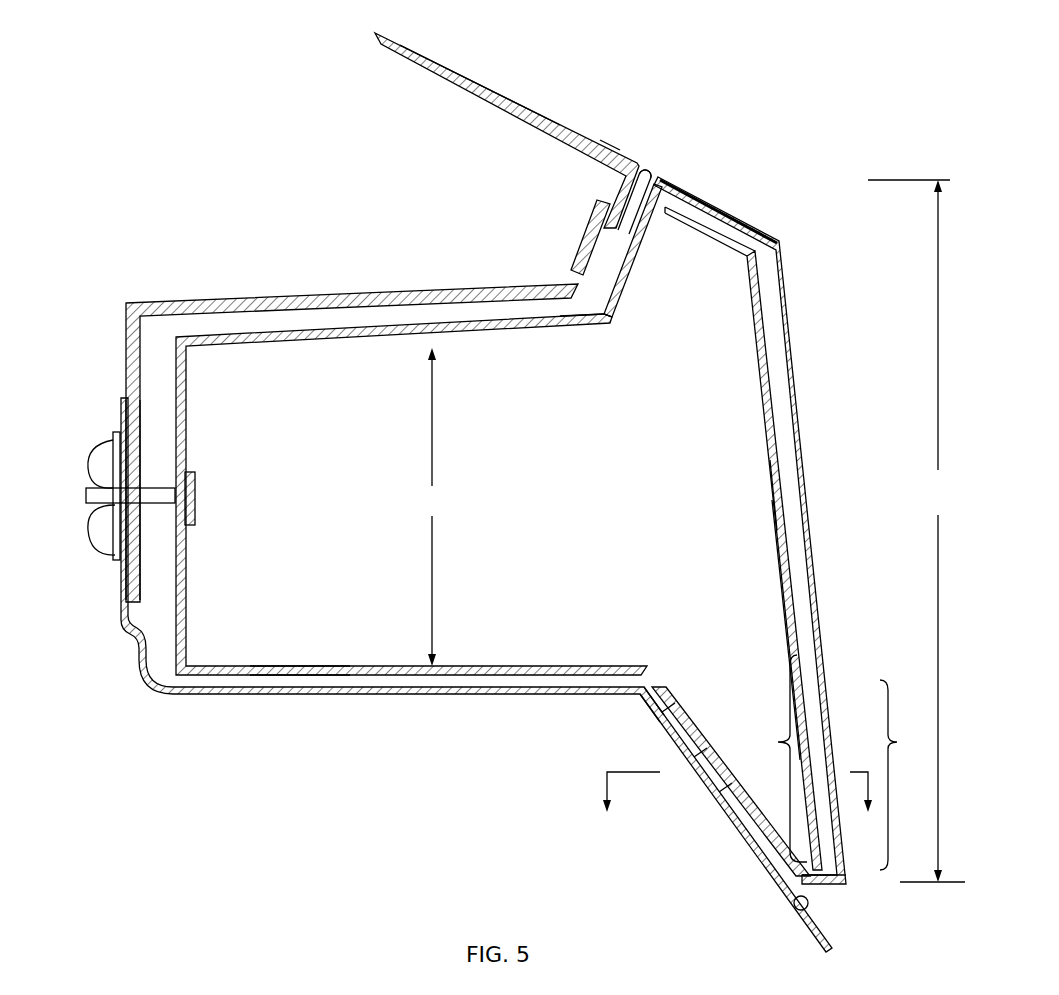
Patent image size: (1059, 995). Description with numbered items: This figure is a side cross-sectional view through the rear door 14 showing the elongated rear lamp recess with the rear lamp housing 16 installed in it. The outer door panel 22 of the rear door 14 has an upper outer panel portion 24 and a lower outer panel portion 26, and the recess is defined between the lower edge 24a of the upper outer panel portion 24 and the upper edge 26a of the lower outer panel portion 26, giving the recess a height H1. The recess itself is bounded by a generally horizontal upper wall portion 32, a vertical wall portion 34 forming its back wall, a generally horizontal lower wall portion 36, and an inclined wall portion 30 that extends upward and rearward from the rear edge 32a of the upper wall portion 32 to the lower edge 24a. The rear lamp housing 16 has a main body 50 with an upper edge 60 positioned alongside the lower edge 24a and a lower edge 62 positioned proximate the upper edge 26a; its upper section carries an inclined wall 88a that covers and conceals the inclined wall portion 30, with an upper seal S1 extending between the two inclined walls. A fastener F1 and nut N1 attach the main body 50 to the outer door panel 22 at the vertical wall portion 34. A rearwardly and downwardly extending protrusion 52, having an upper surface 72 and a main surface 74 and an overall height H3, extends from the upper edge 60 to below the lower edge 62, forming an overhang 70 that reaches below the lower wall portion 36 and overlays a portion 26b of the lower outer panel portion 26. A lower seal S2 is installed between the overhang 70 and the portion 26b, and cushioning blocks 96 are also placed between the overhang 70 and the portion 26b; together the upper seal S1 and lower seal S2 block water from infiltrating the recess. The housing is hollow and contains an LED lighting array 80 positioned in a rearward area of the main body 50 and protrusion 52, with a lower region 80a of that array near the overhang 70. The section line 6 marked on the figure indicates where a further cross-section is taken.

The rear door 14 is at (540, 50).
The outer door panel 22 is at (463, 66).
The upper outer panel portion 24 is at (562, 126).
The lower edge of the upper outer panel portion 24a is at (646, 169).
The upper seal S1 is at (660, 176).
The inclined wall portion 30 is at (596, 250).
The inclined wall of the upper section 88a is at (632, 278).
The main body 50 is at (265, 314).
The lower outer panel portion 26 is at (826, 930).
The vertical wall portion 34 is at (140, 572).
The upper edge of the lower outer panel portion 26a is at (650, 688).
The portion of the lower outer panel portion 26b is at (675, 714).
The cushioning blocks 96 is at (705, 770).
The upper wall portion 32 is at (339, 330).
The rear edge of the upper wall portion 32a is at (582, 297).
The lower wall portion 36 is at (300, 667).
The fastener F1 is at (153, 497).
The nut N1 is at (105, 462).
The height of the rear lamp recess H1 is at (432, 507).
The rear lamp housing 16 is at (799, 328).
The upper edge of the main body 60 is at (690, 187).
The upper surface of the protrusion 72 is at (738, 222).
The protrusion 52 is at (810, 428).
The main surface of the protrusion 74 is at (832, 548).
The LED lighting array 80 is at (760, 496).
The lower cavity region 80a is at (768, 758).
The overhang 70 is at (904, 775).
The lower edge of the main body 62 is at (827, 885).
The lower seal S2 is at (800, 917).
The overall height of the protrusion H3 is at (916, 531).
The section line 6 is at (737, 811).